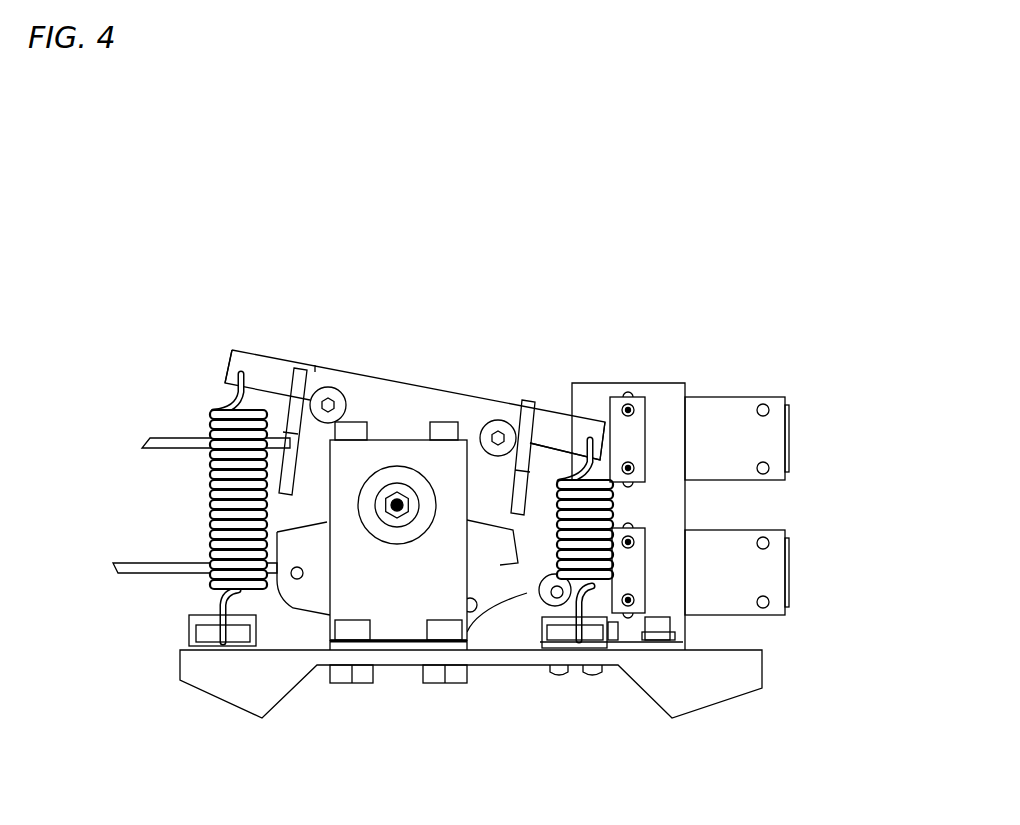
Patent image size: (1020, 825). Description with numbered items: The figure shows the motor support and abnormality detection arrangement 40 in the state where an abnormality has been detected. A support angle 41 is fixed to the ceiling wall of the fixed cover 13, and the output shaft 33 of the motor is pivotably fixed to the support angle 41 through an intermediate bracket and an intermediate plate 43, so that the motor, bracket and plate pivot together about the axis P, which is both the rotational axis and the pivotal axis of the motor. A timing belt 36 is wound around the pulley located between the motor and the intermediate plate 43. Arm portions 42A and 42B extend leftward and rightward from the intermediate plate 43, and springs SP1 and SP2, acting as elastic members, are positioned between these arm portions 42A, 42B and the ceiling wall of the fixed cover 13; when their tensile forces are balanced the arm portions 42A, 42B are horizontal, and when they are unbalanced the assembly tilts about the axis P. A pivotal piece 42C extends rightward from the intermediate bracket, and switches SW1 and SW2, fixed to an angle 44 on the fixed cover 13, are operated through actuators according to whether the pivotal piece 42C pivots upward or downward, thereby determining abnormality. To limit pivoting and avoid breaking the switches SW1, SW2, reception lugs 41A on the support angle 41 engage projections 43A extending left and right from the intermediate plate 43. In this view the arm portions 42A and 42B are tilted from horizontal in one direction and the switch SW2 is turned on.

The contact switching mechanism 40 is at (498, 268).
The arm portion 42A is at (262, 366).
The projection 43A is at (305, 362).
The intermediate plate 43 is at (408, 382).
The output shaft 33 is at (403, 497).
The arm portion 42B is at (552, 430).
The angle 44 is at (663, 400).
The timing belt 36 is at (167, 447).
The spring SP1 is at (205, 512).
The switch SW1 is at (777, 440).
The spring SP2 is at (590, 518).
The switch SW2 is at (780, 575).
The fixed cover 13 is at (753, 668).
The reception lug 41A is at (313, 555).
The rotational axis P is at (395, 507).
The support angle 41 is at (398, 622).
The pivotal piece 42C is at (540, 540).